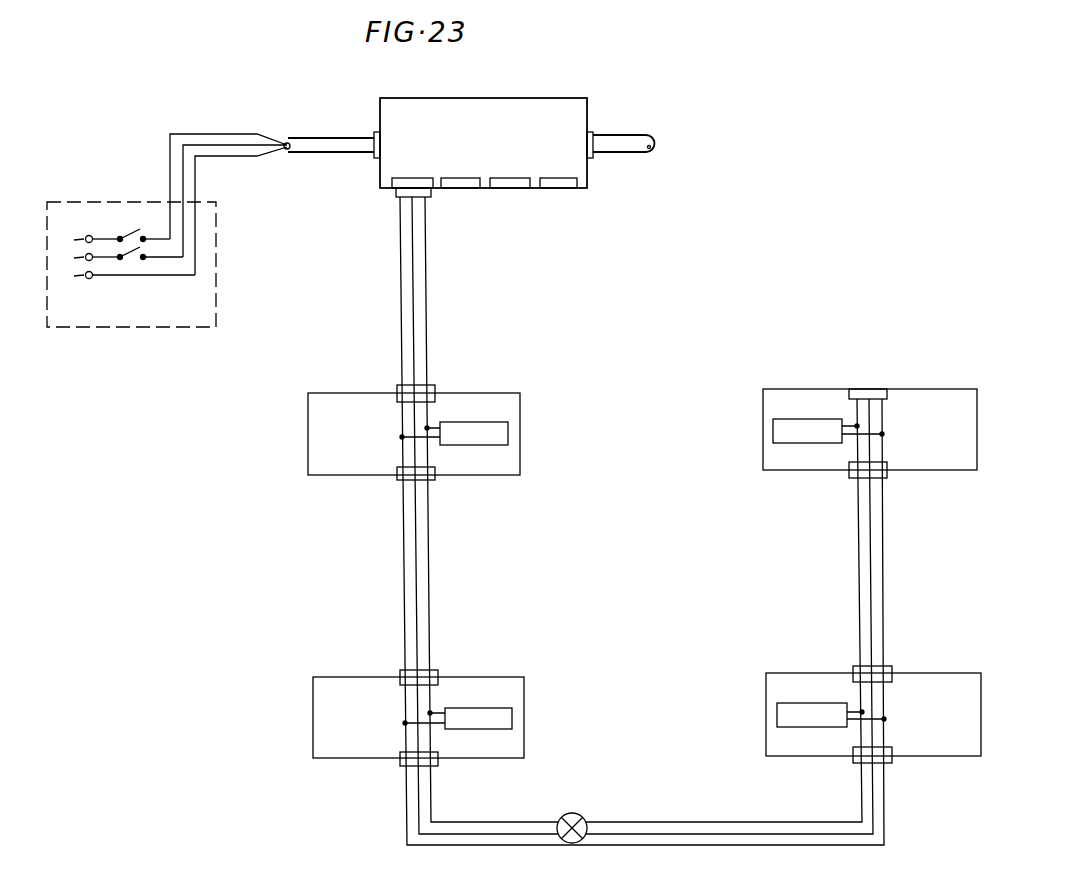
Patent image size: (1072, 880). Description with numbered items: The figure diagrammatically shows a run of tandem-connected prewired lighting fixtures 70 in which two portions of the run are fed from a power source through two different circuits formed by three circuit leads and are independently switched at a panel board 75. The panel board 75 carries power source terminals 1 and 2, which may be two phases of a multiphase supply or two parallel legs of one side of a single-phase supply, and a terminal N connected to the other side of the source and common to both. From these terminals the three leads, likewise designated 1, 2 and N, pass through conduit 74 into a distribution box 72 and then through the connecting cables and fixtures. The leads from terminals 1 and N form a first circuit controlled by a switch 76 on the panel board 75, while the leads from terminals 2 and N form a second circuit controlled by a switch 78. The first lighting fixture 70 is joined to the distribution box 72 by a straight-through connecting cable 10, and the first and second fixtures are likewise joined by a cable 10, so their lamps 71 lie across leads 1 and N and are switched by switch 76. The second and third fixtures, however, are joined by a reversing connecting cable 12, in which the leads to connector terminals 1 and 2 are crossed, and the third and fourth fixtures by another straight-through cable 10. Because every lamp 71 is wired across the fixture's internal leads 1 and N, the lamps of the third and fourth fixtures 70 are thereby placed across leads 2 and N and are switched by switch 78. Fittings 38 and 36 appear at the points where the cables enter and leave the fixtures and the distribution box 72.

The distribution box 72 is at (517, 98).
The conduit 74 is at (312, 152).
The panel board 75 is at (123, 328).
The switch 76 is at (141, 231).
The switch 78 is at (129, 262).
The power source terminal and circuit lead 1 is at (426, 246).
The power source terminal and circuit lead 2 is at (413, 270).
The neutral terminal and circuit lead N is at (401, 291).
The straight-through connecting cable 10 is at (430, 306).
The reversing connecting cable 12 is at (690, 847).
The cable clamp / terminal 38 is at (497, 178).
The cable clamp 36 is at (397, 398).
The lighting fixture 70 is at (482, 388).
The lamp 71 is at (457, 422).